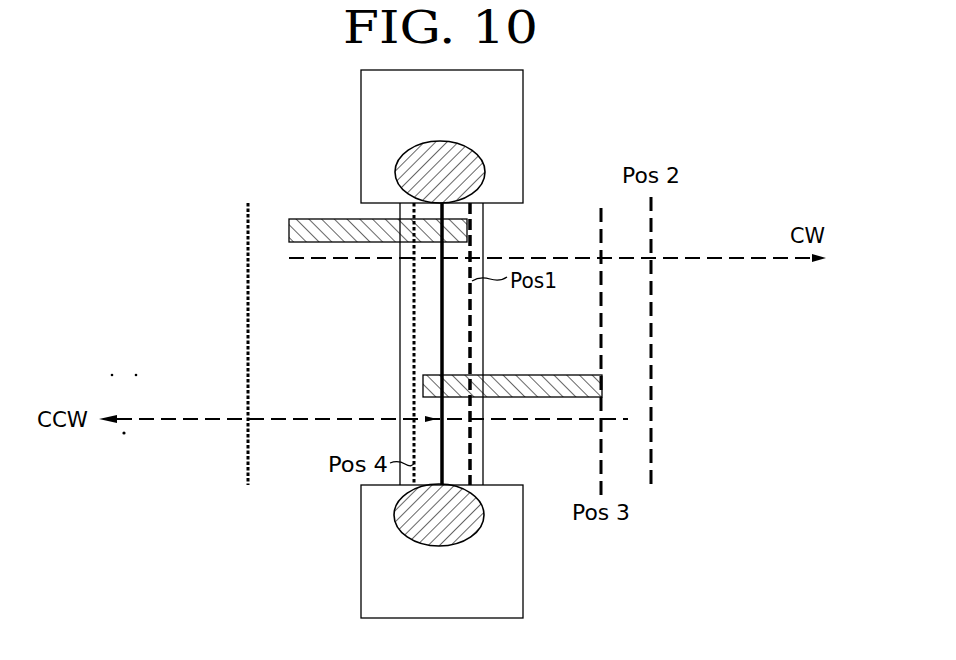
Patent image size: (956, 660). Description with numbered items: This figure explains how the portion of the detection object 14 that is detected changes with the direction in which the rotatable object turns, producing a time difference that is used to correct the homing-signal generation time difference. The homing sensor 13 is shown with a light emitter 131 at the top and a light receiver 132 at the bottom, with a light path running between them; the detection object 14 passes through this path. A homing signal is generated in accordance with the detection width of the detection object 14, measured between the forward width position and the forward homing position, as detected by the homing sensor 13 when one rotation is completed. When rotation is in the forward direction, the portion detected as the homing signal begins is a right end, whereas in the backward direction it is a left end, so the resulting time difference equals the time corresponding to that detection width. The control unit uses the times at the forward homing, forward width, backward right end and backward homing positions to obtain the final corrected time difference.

The homing sensor 13 is at (423, 344).
The light emitter 131 is at (523, 142).
The light receiver 132 is at (523, 540).
The detection object 14 is at (310, 219).